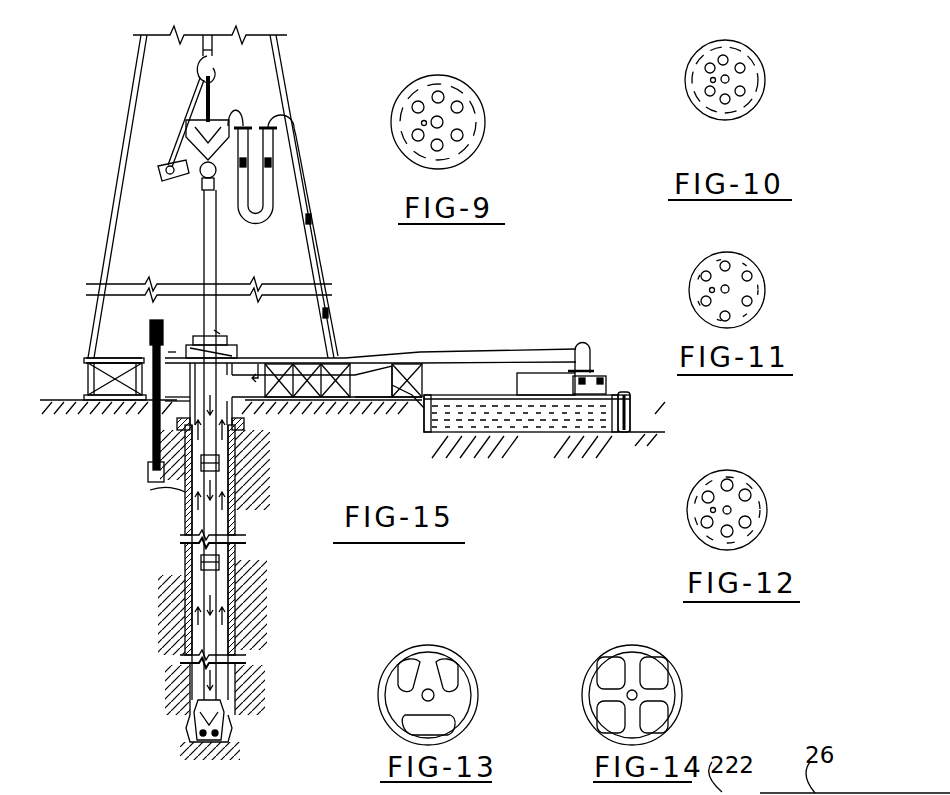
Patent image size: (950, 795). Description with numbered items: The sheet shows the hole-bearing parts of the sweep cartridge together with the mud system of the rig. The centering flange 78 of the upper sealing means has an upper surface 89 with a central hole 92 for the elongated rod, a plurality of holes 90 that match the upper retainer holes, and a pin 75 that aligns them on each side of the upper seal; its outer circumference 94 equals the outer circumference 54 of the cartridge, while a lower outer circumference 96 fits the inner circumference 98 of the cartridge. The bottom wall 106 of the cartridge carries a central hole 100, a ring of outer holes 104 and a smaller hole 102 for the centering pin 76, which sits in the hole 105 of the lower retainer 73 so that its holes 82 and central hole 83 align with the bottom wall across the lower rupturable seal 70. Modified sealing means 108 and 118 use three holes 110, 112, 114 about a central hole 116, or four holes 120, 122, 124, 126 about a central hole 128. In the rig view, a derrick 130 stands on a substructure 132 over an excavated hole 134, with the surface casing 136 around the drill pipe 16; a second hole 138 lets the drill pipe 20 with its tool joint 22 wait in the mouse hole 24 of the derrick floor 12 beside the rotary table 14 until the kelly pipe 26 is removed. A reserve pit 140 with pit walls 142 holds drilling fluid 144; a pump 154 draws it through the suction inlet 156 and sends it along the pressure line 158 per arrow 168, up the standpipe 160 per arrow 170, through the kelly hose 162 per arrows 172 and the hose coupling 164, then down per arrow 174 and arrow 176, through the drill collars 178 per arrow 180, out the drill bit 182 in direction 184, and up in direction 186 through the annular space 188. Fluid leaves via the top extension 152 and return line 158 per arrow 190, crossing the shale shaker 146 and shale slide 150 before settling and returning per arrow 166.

In FIG. 15, the derrick floor 12 is at (136, 351).
In FIG. 15, the rotary table 14 is at (238, 352).
In FIG. 15, the drill pipe 16 is at (238, 452).
In FIG. 15, the drill pipe 20 is at (150, 465).
In FIG. 15, the tool joint 22 is at (150, 330).
In FIG. 15, the mouse hole 24 is at (172, 351).
In FIG. 15, the kelly pipe 26 is at (217, 334).
In FIG. 10, the outer circumference of the sweep cartridge 54 is at (760, 62).
In FIG. 15, the lower rupturable seal 70 is at (94, 788).
In FIG. 12, the lower retainer 73 is at (750, 520).
In FIG. 9, the pin 75 is at (421, 123).
In FIG. 12, the centering pin 76 is at (711, 510).
In FIG. 9, the centering flange 78 is at (420, 98).
In FIG. 12, the holes 82 is at (726, 479).
In FIG. 12, the central hole 83 is at (729, 506).
In FIG. 9, the upper surface 89 is at (416, 105).
In FIG. 9, the holes 90 is at (418, 98).
In FIG. 9, the hole 92 is at (463, 108).
In FIG. 9, the outer circumference 94 is at (442, 118).
In FIG. 9, the outer circumference 96 is at (455, 152).
In FIG. 10, the inner circumference 98 is at (745, 76).
In FIG. 10, the central hole 100 is at (730, 81).
In FIG. 11, the central hole 100 is at (728, 294).
In FIG. 10, the hole 102 is at (710, 80).
In FIG. 11, the hole 102 is at (709, 290).
In FIG. 10, the outer holes 104 is at (706, 65).
In FIG. 11, the outer holes 104 is at (730, 261).
In FIG. 12, the hole 105 is at (704, 523).
In FIG. 10, the bottom wall 106 is at (742, 100).
In FIG. 11, the bottom wall 106 is at (749, 272).
In FIG. 13, the modified sealing means 108 is at (448, 660).
In FIG. 13, the hole 110 is at (410, 670).
In FIG. 13, the hole 112 is at (450, 668).
In FIG. 13, the hole 114 is at (420, 722).
In FIG. 13, the central hole 116 is at (404, 690).
In FIG. 14, the modified sealing means 118 is at (605, 670).
In FIG. 14, the hole 120 is at (612, 680).
In FIG. 14, the hole 122 is at (660, 672).
In FIG. 14, the hole 124 is at (610, 718).
In FIG. 14, the hole 126 is at (655, 718).
In FIG. 14, the central hole 128 is at (637, 689).
In FIG. 15, the derrick 130 is at (108, 236).
In FIG. 15, the substructure 132 is at (86, 372).
In FIG. 15, the excavated hole 134 is at (246, 428).
In FIG. 15, the surface casing 136 is at (237, 495).
In FIG. 15, the second hole 138 is at (153, 448).
In FIG. 15, the reserve pit 140 is at (512, 436).
In FIG. 15, the pit walls 142 is at (424, 436).
In FIG. 15, the drilling fluid 144 is at (538, 434).
In FIG. 15, the shale shaker 146 is at (362, 368).
In FIG. 15, the shale slide 150 is at (352, 410).
In FIG. 15, the top extension 152 is at (162, 402).
In FIG. 15, the pump 154 is at (517, 386).
In FIG. 15, the suction inlet 156 is at (598, 392).
In FIG. 15, the pump pressure line 158 is at (262, 396).
In FIG. 15, the standpipe 160 is at (318, 246).
In FIG. 15, the kelly hose 162 is at (252, 222).
In FIG. 15, the hose coupling 164 is at (209, 110).
In FIG. 15, the arrow 166 is at (605, 436).
In FIG. 15, the arrow 168 is at (398, 364).
In FIG. 15, the arrow 170 is at (311, 220).
In FIG. 15, the arrows 172 is at (270, 158).
In FIG. 15, the arrow 174 is at (203, 213).
In FIG. 15, the arrow 176 is at (200, 518).
In FIG. 15, the drill collars 178 is at (220, 665).
In FIG. 15, the arrow 180 is at (230, 690).
In FIG. 15, the drill bit 182 is at (196, 716).
In FIG. 15, the direction 184 is at (188, 745).
In FIG. 15, the direction 186 is at (194, 490).
In FIG. 15, the annular space 188 is at (185, 580).
In FIG. 15, the arrow 190 is at (258, 364).